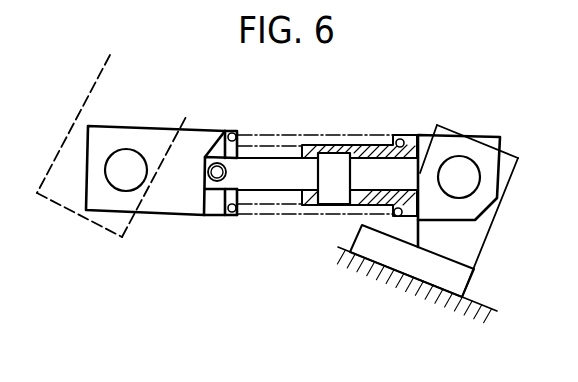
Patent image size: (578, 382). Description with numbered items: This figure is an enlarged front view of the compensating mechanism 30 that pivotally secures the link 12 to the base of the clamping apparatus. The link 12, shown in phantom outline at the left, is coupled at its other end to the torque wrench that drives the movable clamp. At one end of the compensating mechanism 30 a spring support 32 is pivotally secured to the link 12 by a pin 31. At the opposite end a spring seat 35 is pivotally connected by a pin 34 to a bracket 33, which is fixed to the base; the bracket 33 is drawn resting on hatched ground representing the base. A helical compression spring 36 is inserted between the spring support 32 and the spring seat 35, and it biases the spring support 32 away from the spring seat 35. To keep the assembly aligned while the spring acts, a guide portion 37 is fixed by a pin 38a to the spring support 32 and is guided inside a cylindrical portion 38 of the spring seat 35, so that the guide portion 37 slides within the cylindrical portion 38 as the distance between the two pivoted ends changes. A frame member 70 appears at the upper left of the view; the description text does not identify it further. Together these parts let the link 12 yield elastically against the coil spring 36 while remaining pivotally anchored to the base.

The frame member 70 is at (143, 0).
The link 12 is at (72, 140).
The compensating mechanism 30 is at (209, 255).
The pin 31 is at (140, 178).
The spring support 32 is at (190, 131).
The bracket 33 is at (473, 238).
The pin 34 is at (472, 176).
The spring seat 35 is at (417, 138).
The helical compression spring 36 is at (286, 133).
The guide portion 37 is at (325, 188).
The cylindrical portion 38 is at (383, 138).
The pin 38a is at (217, 180).